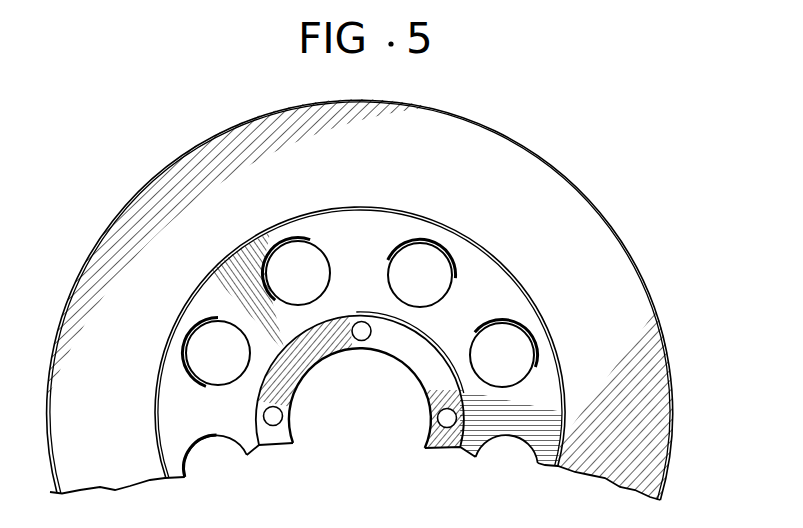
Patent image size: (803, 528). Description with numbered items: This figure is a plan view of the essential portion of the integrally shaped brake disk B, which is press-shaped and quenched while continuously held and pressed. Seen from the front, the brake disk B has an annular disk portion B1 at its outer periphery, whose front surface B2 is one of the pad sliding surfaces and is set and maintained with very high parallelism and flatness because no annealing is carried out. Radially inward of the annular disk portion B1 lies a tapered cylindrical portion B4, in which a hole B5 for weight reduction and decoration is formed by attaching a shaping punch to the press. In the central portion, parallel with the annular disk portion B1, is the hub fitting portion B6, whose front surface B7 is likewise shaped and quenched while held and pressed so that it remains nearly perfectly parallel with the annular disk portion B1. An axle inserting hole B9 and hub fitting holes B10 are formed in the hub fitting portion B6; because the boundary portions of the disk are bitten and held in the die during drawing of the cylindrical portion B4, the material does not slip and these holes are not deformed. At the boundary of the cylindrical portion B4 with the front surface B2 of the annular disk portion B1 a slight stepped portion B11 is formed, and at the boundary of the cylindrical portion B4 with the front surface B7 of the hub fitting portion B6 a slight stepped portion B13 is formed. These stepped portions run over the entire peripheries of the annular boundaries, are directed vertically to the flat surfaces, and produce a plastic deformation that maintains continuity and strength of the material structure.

The brake disk B is at (518, 172).
The annular disk portion B1 is at (577, 207).
The front surface B2 is at (602, 295).
The tapered cylindrical portion B4 is at (545, 376).
The hole B5 is at (140, 413).
The hub fitting portion B6 is at (443, 446).
The front surface B7 is at (297, 372).
The axle inserting hole B9 is at (362, 342).
The hub fitting holes B10 is at (273, 426).
The stepped portion B11 is at (248, 243).
The stepped portion B13 is at (258, 325).